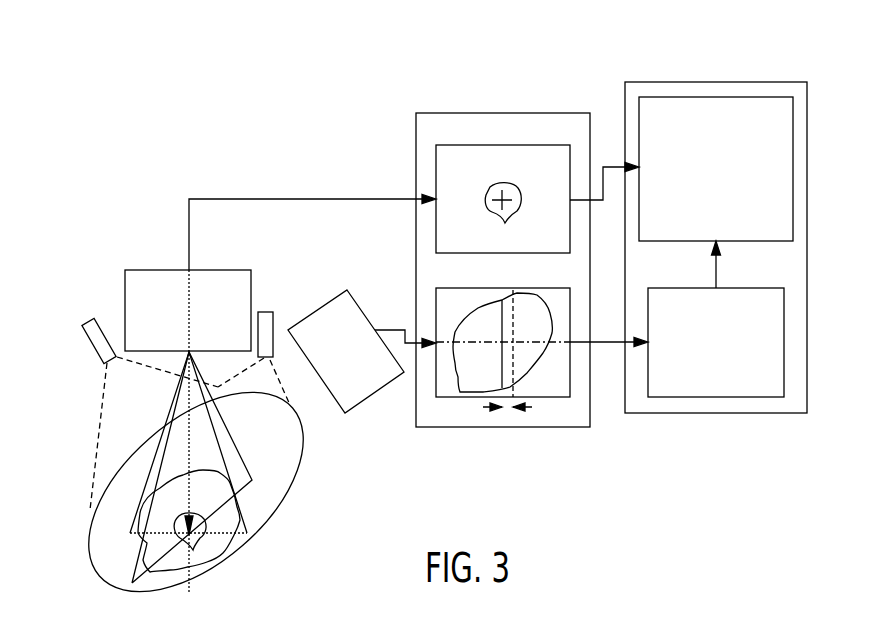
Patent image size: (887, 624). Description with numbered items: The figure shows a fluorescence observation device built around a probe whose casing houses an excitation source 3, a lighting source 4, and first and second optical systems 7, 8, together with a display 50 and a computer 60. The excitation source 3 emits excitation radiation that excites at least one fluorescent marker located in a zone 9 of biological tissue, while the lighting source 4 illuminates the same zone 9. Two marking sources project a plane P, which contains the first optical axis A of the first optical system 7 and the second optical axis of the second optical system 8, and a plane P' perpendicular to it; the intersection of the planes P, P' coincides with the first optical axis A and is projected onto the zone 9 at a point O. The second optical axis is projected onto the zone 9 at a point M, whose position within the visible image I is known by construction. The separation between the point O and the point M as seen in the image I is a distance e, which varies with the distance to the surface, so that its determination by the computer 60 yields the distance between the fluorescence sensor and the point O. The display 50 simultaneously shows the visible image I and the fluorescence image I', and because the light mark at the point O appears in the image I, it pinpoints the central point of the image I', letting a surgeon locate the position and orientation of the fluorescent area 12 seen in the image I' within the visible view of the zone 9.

The excitation source 3 is at (98, 322).
The lighting source 4 is at (268, 318).
The first optical system 7 is at (150, 268).
The second optical system 8 is at (345, 310).
The zone 9 is at (250, 524).
The fluorescent area 12 is at (220, 545).
The display 50 is at (496, 271).
The computer 60 is at (770, 82).
The first optical axis A is at (192, 588).
The plane P is at (153, 442).
The plane P' is at (154, 471).
The point O is at (186, 540).
The visible image I is at (508, 381).
The fluorescence image I' is at (503, 160).
The point M is at (513, 397).
The distance e is at (507, 417).